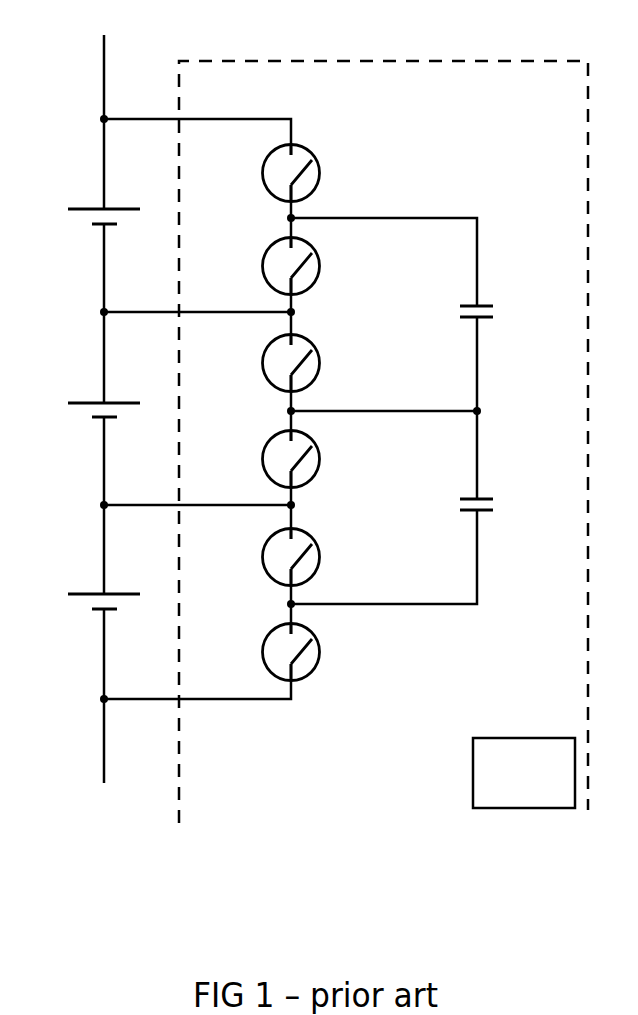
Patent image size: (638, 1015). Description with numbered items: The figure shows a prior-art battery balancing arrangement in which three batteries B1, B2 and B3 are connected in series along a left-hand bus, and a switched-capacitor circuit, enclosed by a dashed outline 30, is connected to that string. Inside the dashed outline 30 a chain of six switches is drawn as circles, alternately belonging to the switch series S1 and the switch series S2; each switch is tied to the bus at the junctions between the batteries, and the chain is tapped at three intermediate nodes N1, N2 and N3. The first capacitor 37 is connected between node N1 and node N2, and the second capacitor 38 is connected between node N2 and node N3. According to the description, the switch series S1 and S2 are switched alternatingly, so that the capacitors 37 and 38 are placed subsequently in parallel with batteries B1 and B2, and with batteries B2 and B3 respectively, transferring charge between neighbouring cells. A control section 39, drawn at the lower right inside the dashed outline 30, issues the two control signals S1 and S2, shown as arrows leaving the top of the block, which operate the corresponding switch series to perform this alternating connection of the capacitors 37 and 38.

The balancing circuit (dashed box) 30 is at (472, 62).
The capacitor 37 is at (480, 304).
The capacitor 38 is at (480, 497).
The control section 39 is at (488, 738).
The battery B1 is at (97, 209).
The battery B2 is at (97, 403).
The battery B3 is at (97, 594).
The node N1 is at (288, 218).
The node N2 is at (288, 411).
The node N3 is at (288, 604).
The switch series S1 is at (392, 557).
The switch series S2 is at (392, 652).